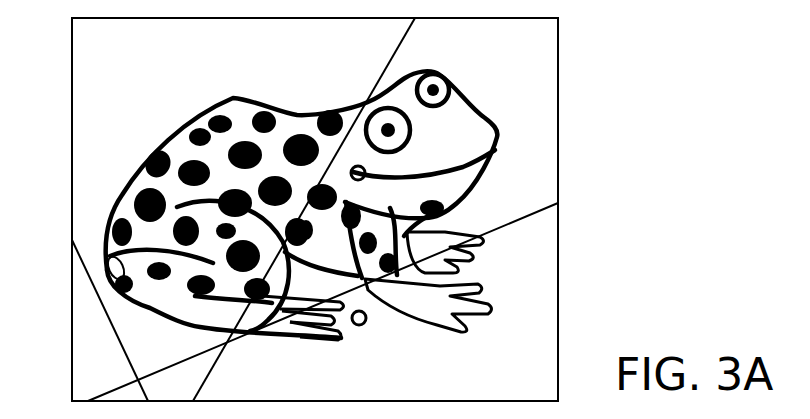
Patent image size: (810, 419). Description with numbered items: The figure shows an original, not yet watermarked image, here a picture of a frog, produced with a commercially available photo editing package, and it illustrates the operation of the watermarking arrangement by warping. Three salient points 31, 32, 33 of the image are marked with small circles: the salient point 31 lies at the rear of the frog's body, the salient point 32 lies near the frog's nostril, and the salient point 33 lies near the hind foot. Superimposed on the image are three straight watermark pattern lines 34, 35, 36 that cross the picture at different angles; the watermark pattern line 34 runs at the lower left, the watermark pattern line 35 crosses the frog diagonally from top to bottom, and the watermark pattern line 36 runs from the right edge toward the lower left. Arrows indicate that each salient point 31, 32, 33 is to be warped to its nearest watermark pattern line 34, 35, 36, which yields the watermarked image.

The salient point 31 is at (96, 275).
The salient point 32 is at (335, 156).
The salient point 33 is at (350, 293).
The watermark pattern line 34 is at (81, 262).
The watermark pattern line 35 is at (407, 43).
The watermark pattern line 36 is at (522, 220).